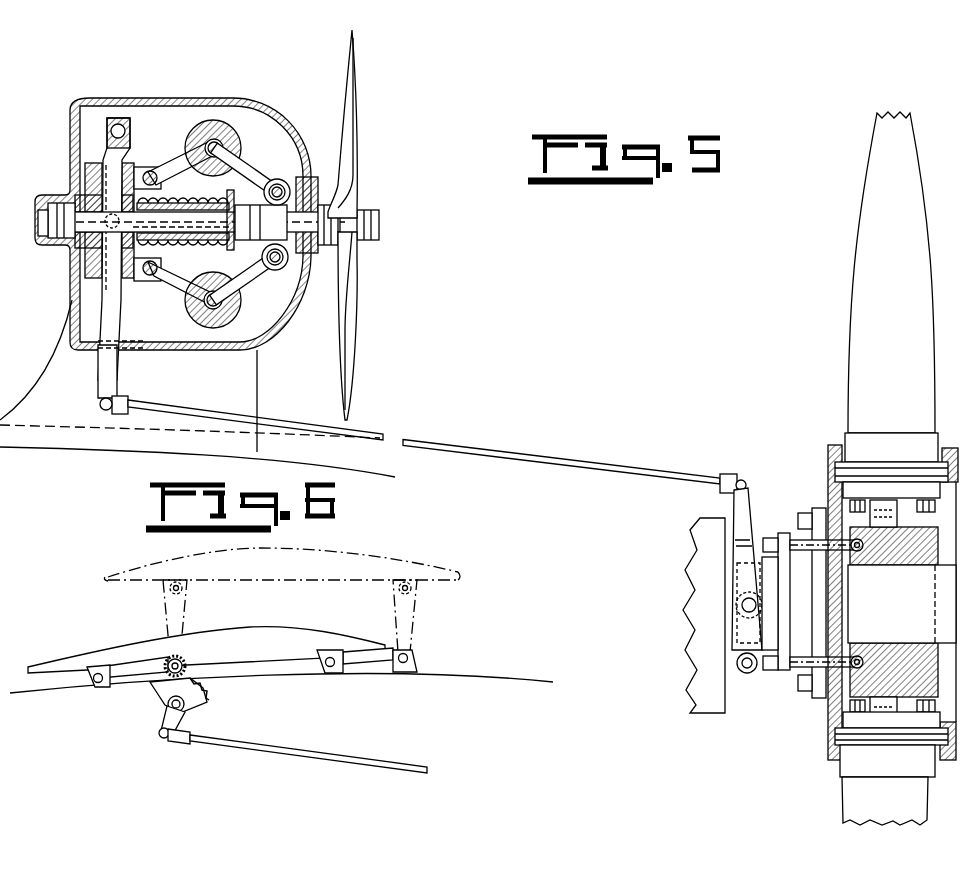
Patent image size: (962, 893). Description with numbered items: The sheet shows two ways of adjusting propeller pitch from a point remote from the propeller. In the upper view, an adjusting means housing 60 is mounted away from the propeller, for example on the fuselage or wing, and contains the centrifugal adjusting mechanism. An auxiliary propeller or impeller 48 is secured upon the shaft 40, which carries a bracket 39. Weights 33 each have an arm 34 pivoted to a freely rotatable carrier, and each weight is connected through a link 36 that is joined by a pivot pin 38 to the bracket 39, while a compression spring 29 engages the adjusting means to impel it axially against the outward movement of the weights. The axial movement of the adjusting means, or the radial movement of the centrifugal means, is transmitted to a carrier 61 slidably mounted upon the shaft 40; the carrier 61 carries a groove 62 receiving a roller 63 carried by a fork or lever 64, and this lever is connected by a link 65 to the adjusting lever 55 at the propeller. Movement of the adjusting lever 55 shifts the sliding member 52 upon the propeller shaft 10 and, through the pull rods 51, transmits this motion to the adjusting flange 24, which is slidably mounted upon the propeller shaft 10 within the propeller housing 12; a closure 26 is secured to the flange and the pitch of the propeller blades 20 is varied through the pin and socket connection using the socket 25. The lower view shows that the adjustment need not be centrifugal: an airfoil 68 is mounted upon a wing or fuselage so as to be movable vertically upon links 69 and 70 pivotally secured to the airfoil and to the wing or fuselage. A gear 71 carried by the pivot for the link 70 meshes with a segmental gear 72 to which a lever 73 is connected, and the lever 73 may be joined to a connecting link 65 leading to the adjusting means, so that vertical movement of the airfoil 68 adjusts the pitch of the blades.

In FIG. 5, the propeller shaft 10 is at (938, 575).
In FIG. 5, the propeller housing 12 is at (828, 483).
In FIG. 5, the propeller blades 20 is at (915, 805).
In FIG. 5, the adjusting flange 24 is at (895, 672).
In FIG. 5, the socket 25 is at (893, 697).
In FIG. 5, the closure 26 is at (913, 372).
In FIG. 5, the compression spring 29 is at (202, 195).
In FIG. 5, the weights 33 is at (223, 137).
In FIG. 5, the arm 34 is at (172, 163).
In FIG. 5, the link 36 is at (250, 168).
In FIG. 5, the pivot pin 38 is at (278, 185).
In FIG. 5, the bracket 39 is at (258, 230).
In FIG. 5, the shaft 40 is at (226, 213).
In FIG. 5, the auxiliary propeller or impeller 48 is at (350, 127).
In FIG. 5, the pull rods 51 is at (797, 673).
In FIG. 5, the sliding member 52 is at (785, 672).
In FIG. 5, the adjusting lever 55 is at (742, 502).
In FIG. 5, the adjusting means housing 60 is at (73, 121).
In FIG. 5, the carrier 61 is at (98, 162).
In FIG. 5, the groove 62 is at (118, 290).
In FIG. 5, the roller 63 is at (121, 221).
In FIG. 5, the fork or lever 64 is at (110, 386).
In FIG. 5, the link 65 is at (557, 460).
In FIG. 6, the link 65 is at (328, 753).
In FIG. 6, the airfoil 68 is at (275, 637).
In FIG. 6, the link 69 is at (365, 665).
In FIG. 6, the link 70 is at (125, 678).
In FIG. 6, the gear 71 is at (188, 665).
In FIG. 6, the segmental gear 72 is at (205, 688).
In FIG. 6, the lever 73 is at (187, 718).